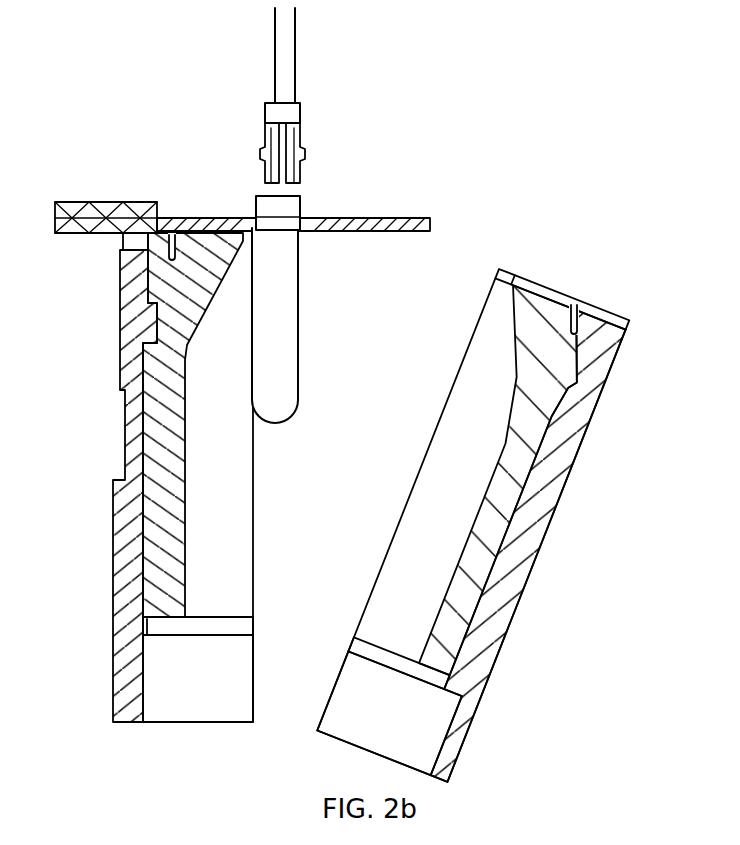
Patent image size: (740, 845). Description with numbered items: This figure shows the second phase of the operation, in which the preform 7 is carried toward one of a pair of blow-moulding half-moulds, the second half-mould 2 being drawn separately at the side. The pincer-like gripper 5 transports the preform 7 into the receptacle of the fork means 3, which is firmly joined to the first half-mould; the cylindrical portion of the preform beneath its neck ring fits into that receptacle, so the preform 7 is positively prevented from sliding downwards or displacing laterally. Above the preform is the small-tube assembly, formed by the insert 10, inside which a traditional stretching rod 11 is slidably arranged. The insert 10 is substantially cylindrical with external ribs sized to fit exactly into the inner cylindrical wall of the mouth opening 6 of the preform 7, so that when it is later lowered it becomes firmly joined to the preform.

The blow-moulding half-mould 2 is at (555, 285).
The fork means 3 is at (245, 222).
The pincer-like gripper 5 is at (333, 216).
The mouth opening 6 is at (303, 198).
The preform 7 is at (300, 324).
The insert 10 is at (300, 113).
The stretching rod 11 is at (297, 30).